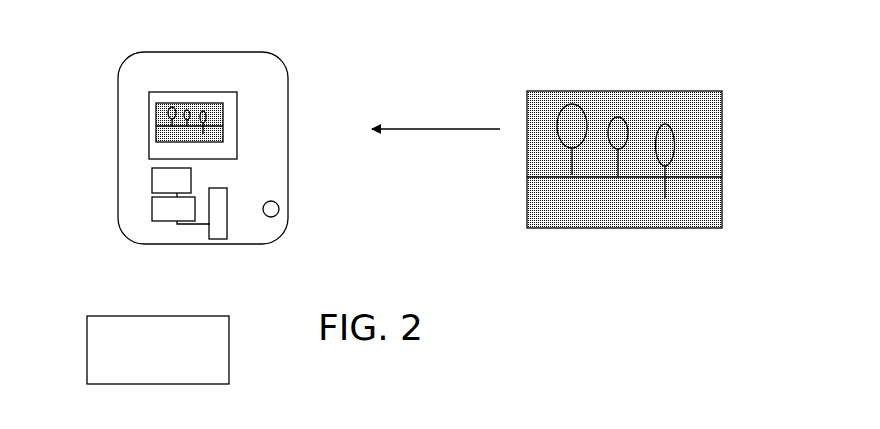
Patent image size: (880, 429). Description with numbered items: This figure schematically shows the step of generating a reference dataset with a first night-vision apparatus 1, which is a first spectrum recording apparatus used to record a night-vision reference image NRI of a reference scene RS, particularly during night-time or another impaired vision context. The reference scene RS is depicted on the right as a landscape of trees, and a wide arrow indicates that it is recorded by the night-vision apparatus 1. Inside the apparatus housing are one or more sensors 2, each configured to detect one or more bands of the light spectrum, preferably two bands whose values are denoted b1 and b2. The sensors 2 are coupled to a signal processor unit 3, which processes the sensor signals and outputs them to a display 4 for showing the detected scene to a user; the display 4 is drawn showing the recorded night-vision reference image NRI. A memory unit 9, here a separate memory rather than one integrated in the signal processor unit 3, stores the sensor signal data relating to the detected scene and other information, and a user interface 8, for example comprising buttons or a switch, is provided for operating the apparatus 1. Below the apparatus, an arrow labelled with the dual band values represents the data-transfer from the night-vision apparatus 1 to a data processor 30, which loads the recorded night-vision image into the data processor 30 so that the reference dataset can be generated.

The night-vision apparatus 1 is at (135, 61).
The sensor 2 is at (162, 201).
The signal processor unit 3 is at (173, 217).
The display 4 is at (155, 103).
The user interface 8 is at (276, 215).
The memory unit 9 is at (222, 203).
The data processor 30 is at (172, 352).
The night-vision reference image NRI is at (183, 161).
The reference scene RS is at (682, 67).